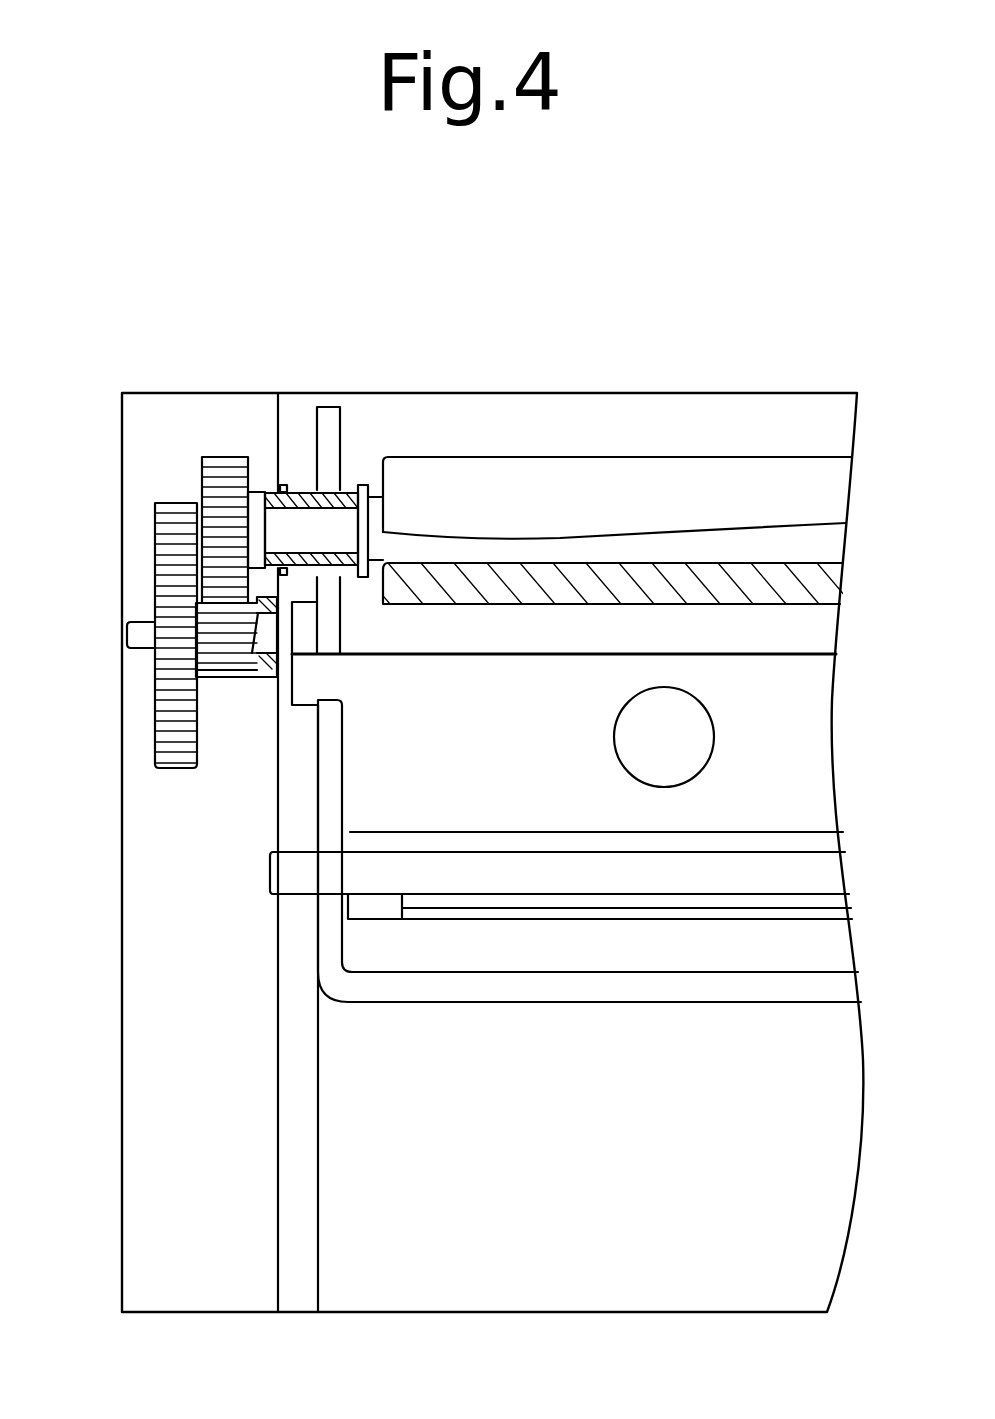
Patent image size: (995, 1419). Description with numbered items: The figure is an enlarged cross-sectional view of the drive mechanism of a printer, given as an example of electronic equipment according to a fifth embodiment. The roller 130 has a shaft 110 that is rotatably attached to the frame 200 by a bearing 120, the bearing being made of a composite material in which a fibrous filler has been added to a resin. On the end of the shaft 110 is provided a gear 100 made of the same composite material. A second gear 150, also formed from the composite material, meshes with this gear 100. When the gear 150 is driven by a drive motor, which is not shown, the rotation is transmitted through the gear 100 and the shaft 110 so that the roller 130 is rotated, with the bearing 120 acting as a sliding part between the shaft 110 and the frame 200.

The gear 100 is at (213, 457).
The shaft 110 is at (345, 517).
The bearing 120 is at (305, 490).
The roller 130 is at (643, 475).
The gear 150 is at (163, 723).
The frame 200 is at (295, 403).